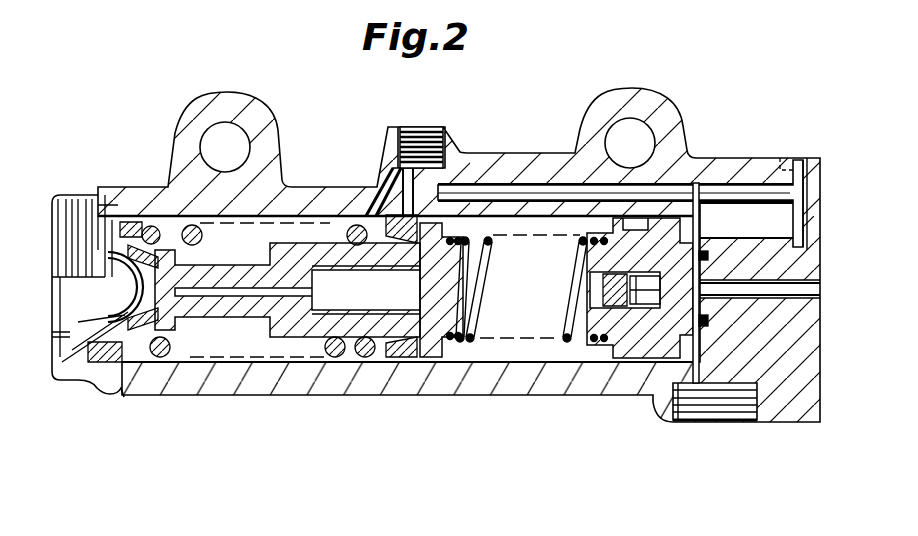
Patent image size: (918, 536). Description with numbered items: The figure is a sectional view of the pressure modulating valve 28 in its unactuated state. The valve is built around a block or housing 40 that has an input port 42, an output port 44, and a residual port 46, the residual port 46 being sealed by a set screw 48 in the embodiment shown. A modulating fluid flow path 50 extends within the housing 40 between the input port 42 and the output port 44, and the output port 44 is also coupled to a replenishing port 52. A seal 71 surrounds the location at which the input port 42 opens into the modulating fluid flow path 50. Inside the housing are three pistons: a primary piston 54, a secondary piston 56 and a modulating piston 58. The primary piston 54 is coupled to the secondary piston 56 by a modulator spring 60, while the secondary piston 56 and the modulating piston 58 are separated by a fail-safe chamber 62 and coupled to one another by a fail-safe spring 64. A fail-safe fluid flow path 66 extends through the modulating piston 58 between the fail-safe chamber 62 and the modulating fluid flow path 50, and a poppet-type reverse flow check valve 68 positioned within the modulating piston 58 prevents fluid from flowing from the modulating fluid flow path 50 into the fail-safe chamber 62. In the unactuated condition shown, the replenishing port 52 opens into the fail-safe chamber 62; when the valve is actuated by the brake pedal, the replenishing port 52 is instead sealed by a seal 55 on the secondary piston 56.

The pressure modulating valve 28 is at (353, 410).
The housing 40 is at (663, 112).
The input port 42 is at (820, 290).
The output port 44 is at (798, 162).
The residual port 46 is at (402, 136).
The set screw 48 is at (442, 136).
The modulating fluid flow path 50 is at (700, 183).
The replenishing port 52 is at (385, 196).
The primary piston 54 is at (118, 392).
The seal 55 is at (400, 395).
The secondary piston 56 is at (450, 395).
The modulating piston 58 is at (655, 400).
The modulator spring 60 is at (310, 364).
The fail-safe chamber 62 is at (525, 265).
The fail-safe spring 64 is at (480, 313).
The fail-safe fluid flow path 66 is at (695, 420).
The reverse flow check valve 68 is at (620, 310).
The seal 71 is at (709, 321).